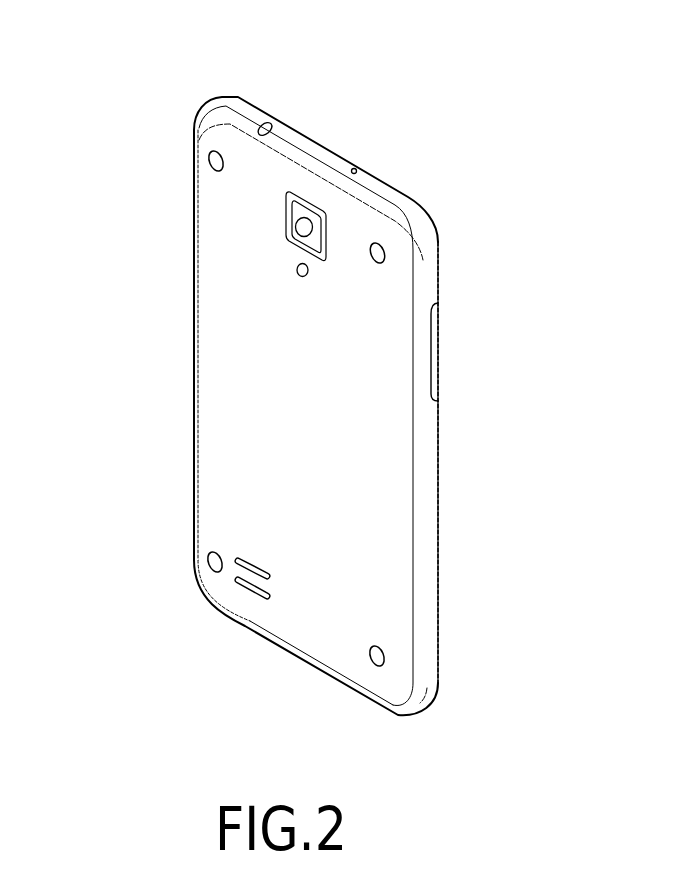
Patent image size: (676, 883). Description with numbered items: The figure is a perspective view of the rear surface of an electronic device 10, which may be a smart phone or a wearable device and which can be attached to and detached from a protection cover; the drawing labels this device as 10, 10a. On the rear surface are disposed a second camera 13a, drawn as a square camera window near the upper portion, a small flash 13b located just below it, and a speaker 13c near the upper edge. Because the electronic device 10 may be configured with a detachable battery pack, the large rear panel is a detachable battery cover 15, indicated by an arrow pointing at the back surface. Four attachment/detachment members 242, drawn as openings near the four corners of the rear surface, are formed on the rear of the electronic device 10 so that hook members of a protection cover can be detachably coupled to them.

The electronic device 10 is at (198, 75).
The rear case 10a is at (282, 353).
The second camera 13a is at (297, 224).
The flash 13b is at (308, 273).
The speaker 13c is at (356, 168).
The battery cover 15 is at (226, 394).
The attachment/detachment members 242 is at (212, 161).